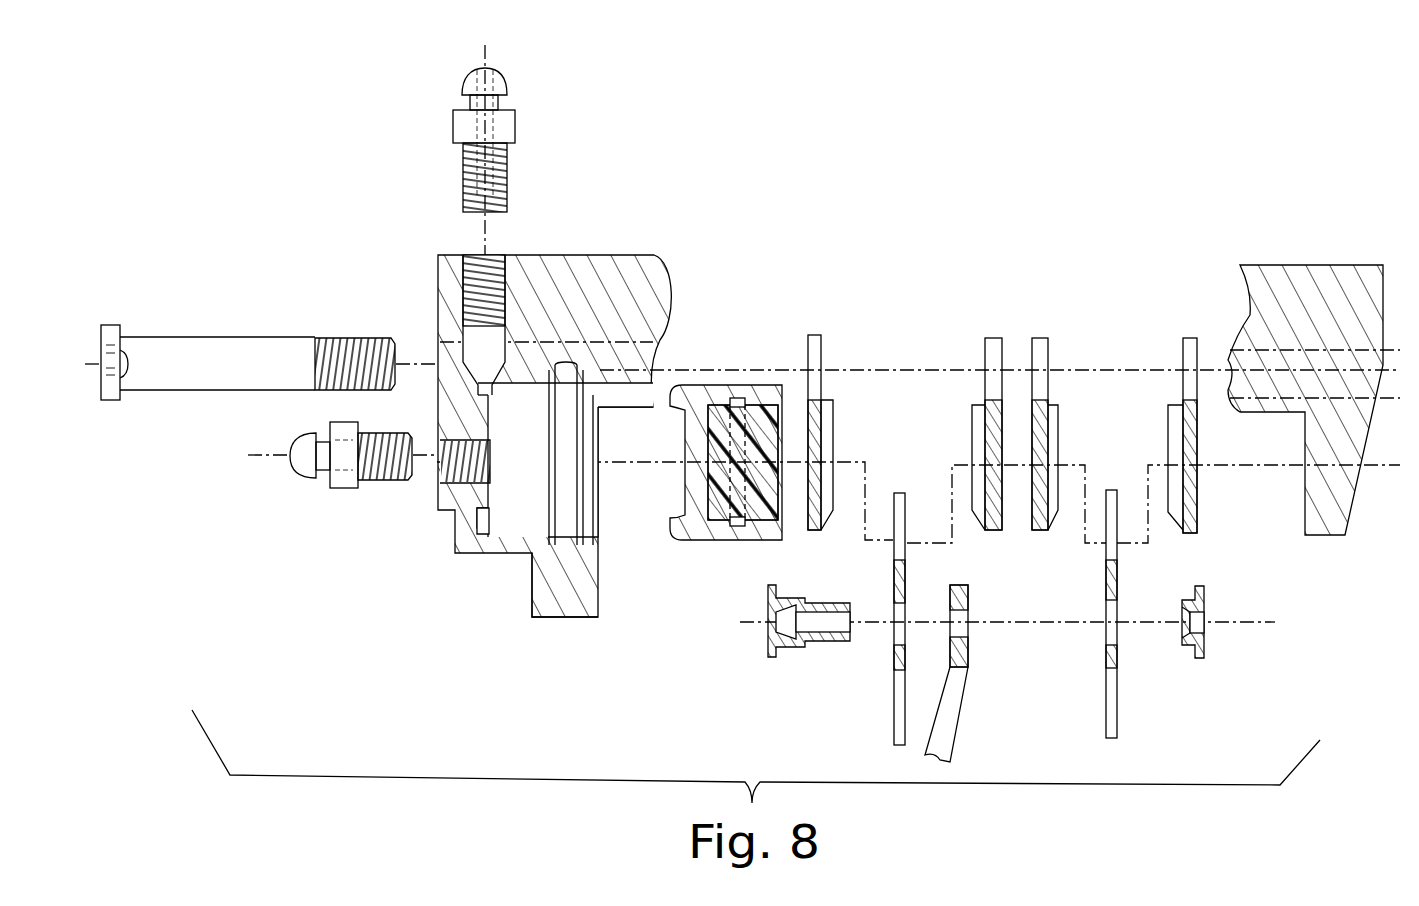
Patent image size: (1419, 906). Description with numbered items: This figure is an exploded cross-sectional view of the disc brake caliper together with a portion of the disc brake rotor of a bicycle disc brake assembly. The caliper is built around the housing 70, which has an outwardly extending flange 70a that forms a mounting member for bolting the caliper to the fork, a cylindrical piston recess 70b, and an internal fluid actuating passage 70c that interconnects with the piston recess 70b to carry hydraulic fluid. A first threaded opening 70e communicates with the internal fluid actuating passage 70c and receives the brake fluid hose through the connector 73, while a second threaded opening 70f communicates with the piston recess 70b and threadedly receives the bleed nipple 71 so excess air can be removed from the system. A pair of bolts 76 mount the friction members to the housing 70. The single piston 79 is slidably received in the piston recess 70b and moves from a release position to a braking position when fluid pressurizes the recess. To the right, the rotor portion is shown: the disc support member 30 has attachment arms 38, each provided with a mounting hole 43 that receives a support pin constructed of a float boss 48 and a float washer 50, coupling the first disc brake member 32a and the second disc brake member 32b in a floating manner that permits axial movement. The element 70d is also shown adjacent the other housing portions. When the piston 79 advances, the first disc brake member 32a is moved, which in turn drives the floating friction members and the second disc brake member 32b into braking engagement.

The disc support member 30 is at (975, 712).
The first disc brake member 32a is at (890, 652).
The second disc brake member 32b is at (1102, 670).
The attachment arm 38 is at (970, 592).
The mounting hole 43 is at (994, 612).
The float boss 48 is at (765, 652).
The float washer 50 is at (1190, 668).
The housing 70 is at (1295, 262).
The outwardly extending flange 70a is at (545, 620).
The piston recess 70b is at (490, 540).
The internal fluid actuating passage 70c is at (438, 338).
The washer 70d is at (1190, 338).
The first threaded opening 70e is at (495, 257).
The second threaded opening 70f is at (415, 483).
The bleed nipple 71 is at (325, 488).
The connector 73 is at (517, 131).
The bolt 76 is at (218, 338).
The piston 79 is at (725, 385).